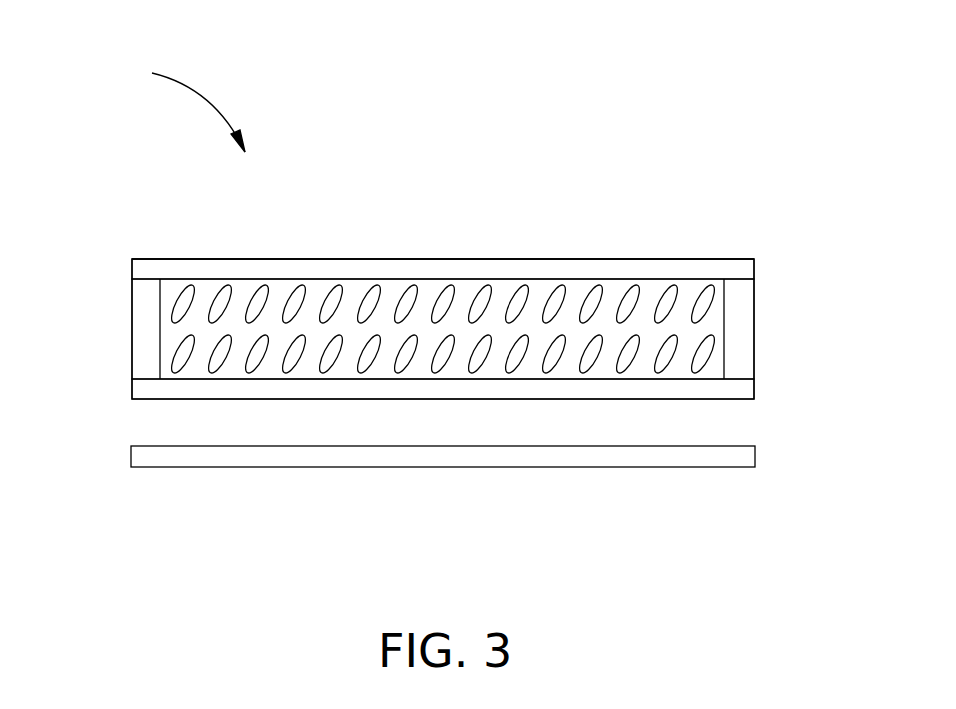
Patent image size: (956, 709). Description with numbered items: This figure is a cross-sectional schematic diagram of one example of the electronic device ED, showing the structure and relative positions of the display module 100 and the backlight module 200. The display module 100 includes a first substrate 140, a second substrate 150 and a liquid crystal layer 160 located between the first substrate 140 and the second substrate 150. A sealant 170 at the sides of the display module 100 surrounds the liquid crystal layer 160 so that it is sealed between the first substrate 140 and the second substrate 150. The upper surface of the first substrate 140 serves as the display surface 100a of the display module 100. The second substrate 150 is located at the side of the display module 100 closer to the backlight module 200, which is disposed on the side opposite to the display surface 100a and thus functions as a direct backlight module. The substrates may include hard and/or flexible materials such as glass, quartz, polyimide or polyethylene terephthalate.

The electronic device ED is at (171, 103).
The display module 100 is at (110, 258).
The display surface 100a is at (715, 259).
The first substrate 140 is at (742, 271).
The second substrate 150 is at (742, 388).
The liquid crystal layer 160 is at (717, 328).
The sealant 170 is at (742, 308).
The backlight module 200 is at (740, 455).